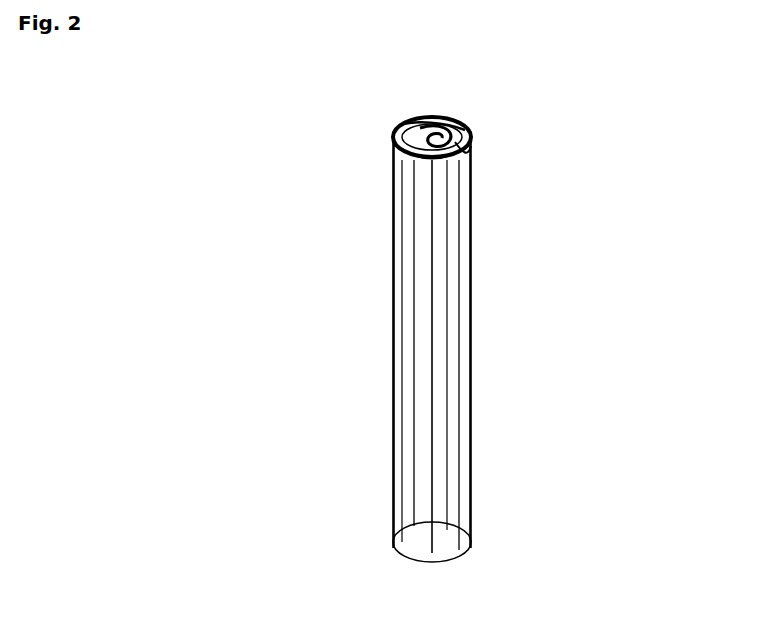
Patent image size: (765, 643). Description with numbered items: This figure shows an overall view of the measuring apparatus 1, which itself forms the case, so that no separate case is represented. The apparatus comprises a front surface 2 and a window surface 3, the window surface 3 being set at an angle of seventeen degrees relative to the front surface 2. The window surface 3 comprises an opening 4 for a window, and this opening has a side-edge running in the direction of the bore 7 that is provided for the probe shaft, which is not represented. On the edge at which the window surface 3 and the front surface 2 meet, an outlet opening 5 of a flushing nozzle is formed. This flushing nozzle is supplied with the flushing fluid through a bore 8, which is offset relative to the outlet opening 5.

The measuring apparatus 1 is at (385, 190).
The front surface 2 is at (469, 140).
The window surface 3 is at (392, 131).
The opening 4 is at (418, 120).
The outlet opening 5 is at (466, 128).
The bore 7 is at (395, 541).
The bore 8 is at (450, 543).